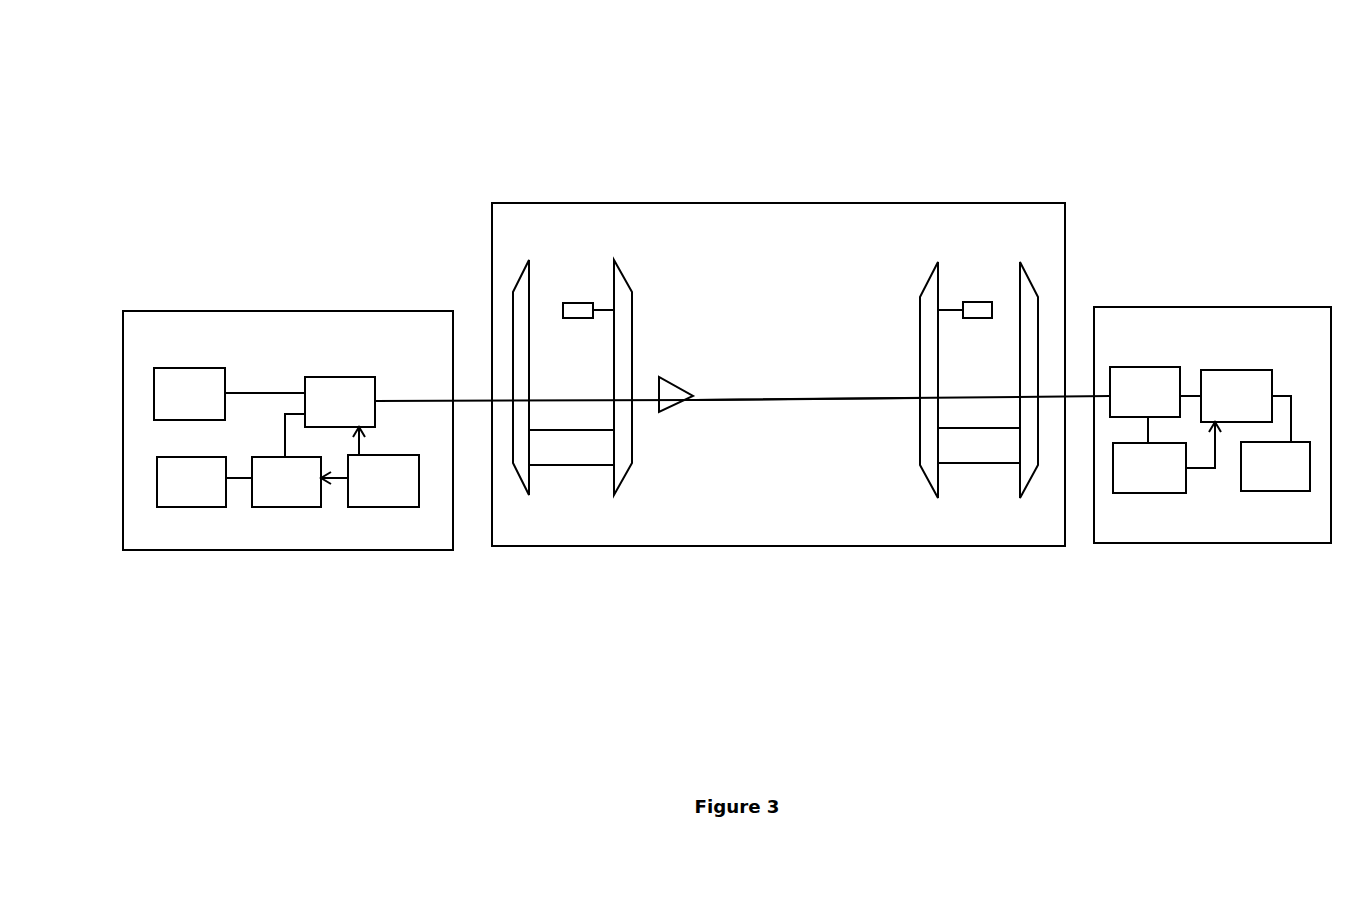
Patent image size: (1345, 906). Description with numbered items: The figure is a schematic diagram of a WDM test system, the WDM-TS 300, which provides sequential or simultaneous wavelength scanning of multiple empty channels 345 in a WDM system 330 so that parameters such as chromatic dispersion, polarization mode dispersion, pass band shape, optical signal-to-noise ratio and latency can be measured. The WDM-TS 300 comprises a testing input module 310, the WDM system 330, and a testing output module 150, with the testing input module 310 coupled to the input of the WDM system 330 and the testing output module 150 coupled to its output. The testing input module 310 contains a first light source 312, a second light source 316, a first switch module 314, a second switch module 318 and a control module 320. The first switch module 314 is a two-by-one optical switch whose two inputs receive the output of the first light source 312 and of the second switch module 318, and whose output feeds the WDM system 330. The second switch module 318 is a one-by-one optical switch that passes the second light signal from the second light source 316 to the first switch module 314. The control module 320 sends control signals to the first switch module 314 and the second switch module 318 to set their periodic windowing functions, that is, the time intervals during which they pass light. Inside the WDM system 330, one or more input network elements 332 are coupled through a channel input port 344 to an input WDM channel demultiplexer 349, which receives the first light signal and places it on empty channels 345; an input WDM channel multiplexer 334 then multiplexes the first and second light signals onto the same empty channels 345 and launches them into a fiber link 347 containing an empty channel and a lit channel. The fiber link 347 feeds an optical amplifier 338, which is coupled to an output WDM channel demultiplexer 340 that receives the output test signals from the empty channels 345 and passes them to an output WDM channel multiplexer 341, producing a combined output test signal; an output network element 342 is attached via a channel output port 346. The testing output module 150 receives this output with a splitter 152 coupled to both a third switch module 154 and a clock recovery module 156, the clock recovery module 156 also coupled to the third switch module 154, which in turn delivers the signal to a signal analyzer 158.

The WDM-TS 300 is at (1022, 110).
The testing input module 310 is at (290, 311).
The first light source 312 is at (190, 368).
The first switch module 314 is at (340, 377).
The second light source 316 is at (160, 457).
The second switch module 318 is at (275, 457).
The control module 320 is at (382, 507).
The WDM system 330 is at (778, 203).
The input network elements 332 is at (561, 302).
The input WDM channel multiplexer 334 is at (623, 280).
The optical amplifier 338 is at (680, 403).
The output WDM channel demultiplexer 340 is at (935, 270).
The output WDM channel multiplexer 341 is at (1033, 478).
The output network element 342 is at (995, 302).
The channel input port 344 is at (596, 310).
The empty channels 345 is at (557, 400).
The channel output port 346 is at (948, 310).
The fiber link 347 is at (790, 402).
The input WDM channel demultiplexer 349 is at (520, 277).
The testing output module 150 is at (1215, 307).
The splitter 152 is at (1147, 367).
The third switch module 154 is at (1238, 370).
The clock recovery module 156 is at (1148, 493).
The signal analyzer 158 is at (1273, 491).